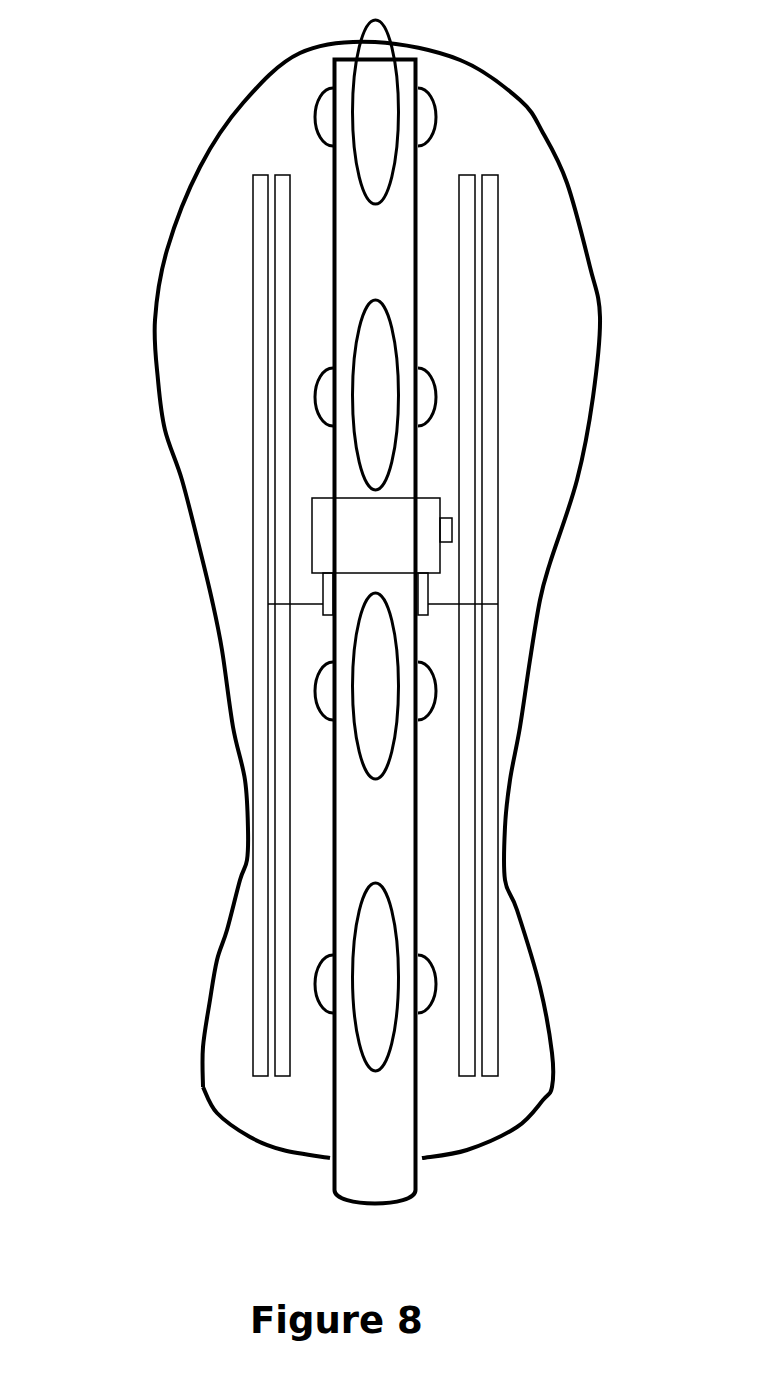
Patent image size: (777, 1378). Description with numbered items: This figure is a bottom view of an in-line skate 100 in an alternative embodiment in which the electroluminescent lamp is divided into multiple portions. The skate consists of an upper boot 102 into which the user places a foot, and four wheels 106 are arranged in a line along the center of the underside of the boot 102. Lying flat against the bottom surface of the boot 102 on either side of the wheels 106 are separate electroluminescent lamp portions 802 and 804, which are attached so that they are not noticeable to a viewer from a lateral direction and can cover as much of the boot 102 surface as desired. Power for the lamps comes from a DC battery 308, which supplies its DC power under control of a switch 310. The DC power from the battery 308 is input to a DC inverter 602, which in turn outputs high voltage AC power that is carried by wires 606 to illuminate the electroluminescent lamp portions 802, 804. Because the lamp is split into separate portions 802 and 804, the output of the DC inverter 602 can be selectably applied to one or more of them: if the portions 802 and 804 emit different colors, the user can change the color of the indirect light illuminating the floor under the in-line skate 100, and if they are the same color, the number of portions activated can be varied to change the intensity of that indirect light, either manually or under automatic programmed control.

The in-line skate 100 is at (150, 582).
The boot 102 is at (223, 1053).
The wheels 106 is at (388, 180).
The battery 308 is at (430, 540).
The switch 310 is at (452, 528).
The DC inverter 602 is at (417, 604).
The wires 606 is at (307, 604).
The electroluminescent lamp portion 802 is at (253, 368).
The electroluminescent lamp portion 804 is at (285, 173).